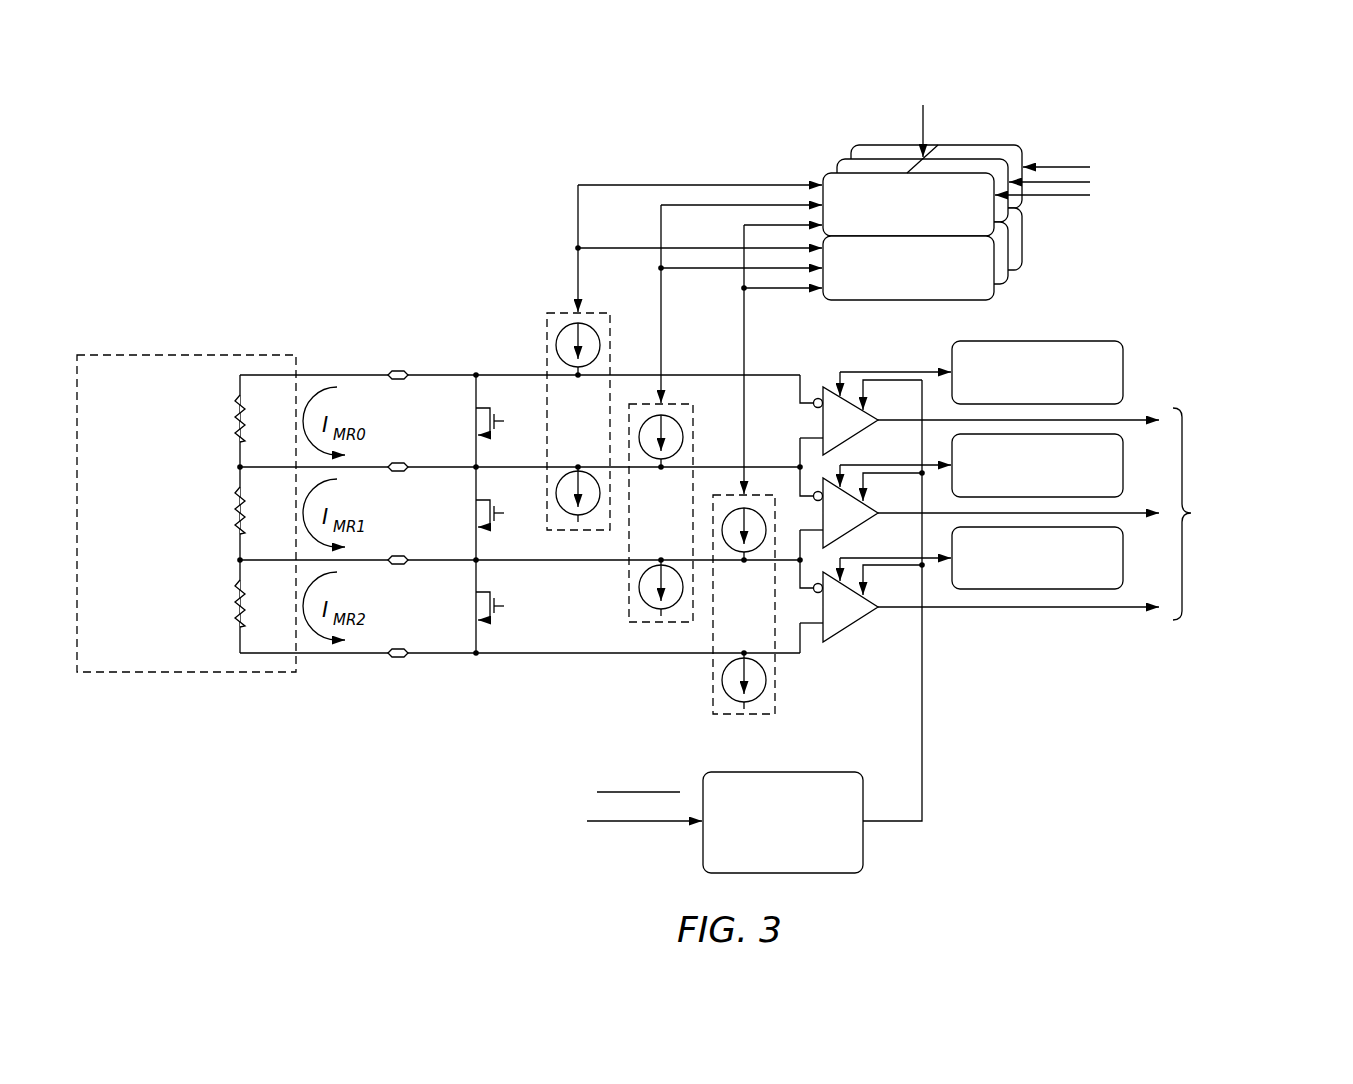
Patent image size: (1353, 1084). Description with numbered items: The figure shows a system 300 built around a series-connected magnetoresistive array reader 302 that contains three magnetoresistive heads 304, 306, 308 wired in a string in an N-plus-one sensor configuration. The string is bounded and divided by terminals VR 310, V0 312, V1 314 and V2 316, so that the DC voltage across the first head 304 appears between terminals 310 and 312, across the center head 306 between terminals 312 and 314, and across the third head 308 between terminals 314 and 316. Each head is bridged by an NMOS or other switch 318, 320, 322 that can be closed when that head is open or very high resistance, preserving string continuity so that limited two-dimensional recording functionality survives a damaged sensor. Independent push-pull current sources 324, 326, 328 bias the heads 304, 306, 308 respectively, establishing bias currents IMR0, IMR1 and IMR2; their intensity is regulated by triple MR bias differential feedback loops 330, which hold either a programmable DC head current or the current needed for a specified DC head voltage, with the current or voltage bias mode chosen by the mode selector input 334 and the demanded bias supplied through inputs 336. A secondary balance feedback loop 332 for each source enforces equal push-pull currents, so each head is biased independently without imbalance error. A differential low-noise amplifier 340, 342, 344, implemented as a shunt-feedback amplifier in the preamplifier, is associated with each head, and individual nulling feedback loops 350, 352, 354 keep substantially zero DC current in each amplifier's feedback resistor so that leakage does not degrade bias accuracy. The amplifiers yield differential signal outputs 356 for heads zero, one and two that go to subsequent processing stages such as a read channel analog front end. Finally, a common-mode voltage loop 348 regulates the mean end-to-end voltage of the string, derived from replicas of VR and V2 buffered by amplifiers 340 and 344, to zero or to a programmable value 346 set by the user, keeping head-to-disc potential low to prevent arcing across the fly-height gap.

The system 300 is at (1197, 116).
The series-connected magnetoresistive array reader 302 is at (128, 391).
The magnetoresistive head 304 is at (243, 414).
The magnetoresistive head 306 is at (243, 506).
The magnetoresistive head 308 is at (243, 599).
The terminal VR 310 is at (430, 373).
The terminal V0 312 is at (430, 465).
The terminal V1 314 is at (430, 558).
The terminal V2 316 is at (430, 651).
The switch 318 is at (495, 414).
The switch 320 is at (495, 506).
The switch 322 is at (495, 598).
The push-pull current source 324 is at (600, 432).
The push-pull current source 326 is at (683, 525).
The push-pull current source 328 is at (766, 617).
The MR bias differential feedback loop 330 is at (889, 232).
The balance feedback loop 332 is at (889, 297).
The mode selector input 334 is at (923, 119).
The I/V MR bias demand inputs 336 is at (1079, 208).
The differential low-noise amplifier 340 is at (849, 441).
The differential low-noise amplifier 342 is at (849, 533).
The differential low-noise amplifier 344 is at (849, 626).
The programmable value 346 is at (619, 823).
The common-mode voltage loop 348 is at (764, 866).
The nulling feedback loop 350 is at (1018, 398).
The nulling feedback loop 352 is at (1018, 491).
The nulling feedback loop 354 is at (1018, 583).
The differential signal outputs 356 is at (1190, 425).